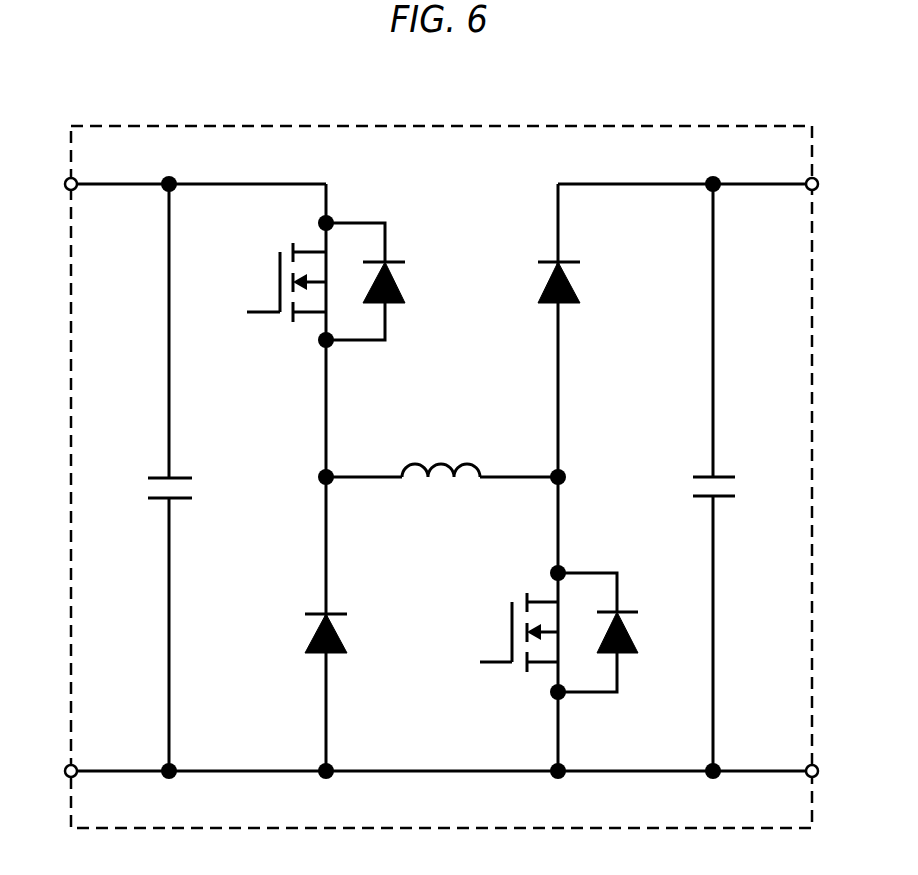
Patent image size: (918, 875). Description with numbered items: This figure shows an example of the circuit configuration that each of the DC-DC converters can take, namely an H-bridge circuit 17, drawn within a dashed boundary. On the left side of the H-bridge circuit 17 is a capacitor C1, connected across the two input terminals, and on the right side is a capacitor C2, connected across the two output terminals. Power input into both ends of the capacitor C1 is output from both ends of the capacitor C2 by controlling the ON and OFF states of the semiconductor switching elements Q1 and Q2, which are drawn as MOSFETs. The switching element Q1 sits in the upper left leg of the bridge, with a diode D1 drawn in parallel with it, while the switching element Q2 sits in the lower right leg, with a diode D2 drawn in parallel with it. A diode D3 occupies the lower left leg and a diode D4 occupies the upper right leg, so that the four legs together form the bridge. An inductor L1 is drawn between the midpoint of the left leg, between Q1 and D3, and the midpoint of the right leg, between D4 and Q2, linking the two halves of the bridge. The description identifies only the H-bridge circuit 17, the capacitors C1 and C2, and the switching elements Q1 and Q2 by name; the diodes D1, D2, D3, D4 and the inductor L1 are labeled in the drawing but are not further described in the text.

The H-bridge circuit 17 is at (653, 126).
The capacitor C1 is at (148, 490).
The capacitor C2 is at (725, 475).
The semiconductor switching element Q1 is at (277, 270).
The semiconductor switching element Q2 is at (510, 623).
The first diode D1 is at (395, 306).
The second diode D2 is at (630, 655).
The third diode D3 is at (333, 657).
The fourth diode D4 is at (565, 306).
The inductor L1 is at (448, 455).